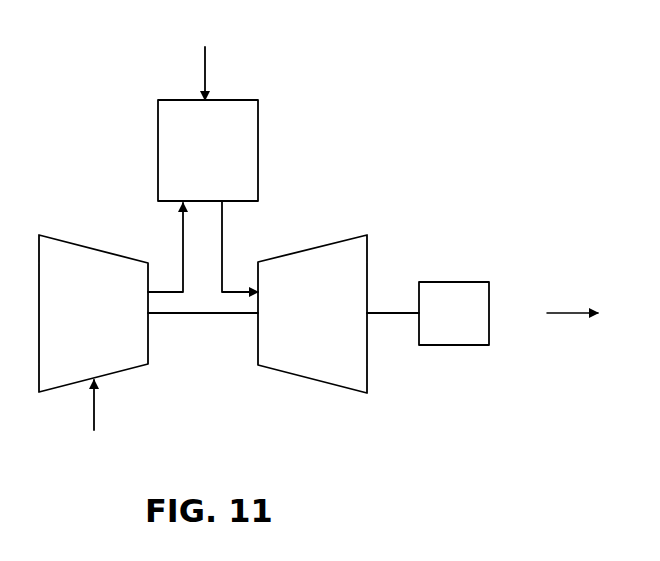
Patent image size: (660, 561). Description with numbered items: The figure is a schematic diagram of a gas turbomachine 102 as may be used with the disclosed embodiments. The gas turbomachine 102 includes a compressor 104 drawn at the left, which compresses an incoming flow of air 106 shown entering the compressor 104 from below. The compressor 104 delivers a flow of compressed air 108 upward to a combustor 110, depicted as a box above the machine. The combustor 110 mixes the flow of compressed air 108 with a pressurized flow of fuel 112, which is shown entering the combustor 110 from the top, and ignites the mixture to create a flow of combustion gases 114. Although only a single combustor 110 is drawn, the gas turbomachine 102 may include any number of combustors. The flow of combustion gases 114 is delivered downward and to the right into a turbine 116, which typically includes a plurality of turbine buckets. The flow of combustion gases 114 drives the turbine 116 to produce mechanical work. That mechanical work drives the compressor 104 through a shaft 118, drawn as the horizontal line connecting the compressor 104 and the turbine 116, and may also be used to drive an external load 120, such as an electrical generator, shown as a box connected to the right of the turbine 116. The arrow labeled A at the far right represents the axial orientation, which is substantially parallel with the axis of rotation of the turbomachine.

The gas turbomachine 102 is at (82, 126).
The compressor 104 is at (109, 328).
The incoming flow of air 106 is at (94, 410).
The flow of compressed air 108 is at (183, 255).
The combustor 110 is at (228, 165).
The pressurized flow of fuel 112 is at (205, 70).
The flow of combustion gases 114 is at (222, 258).
The turbine 116 is at (330, 327).
The shaft 118 is at (211, 313).
The external load 120 is at (472, 325).